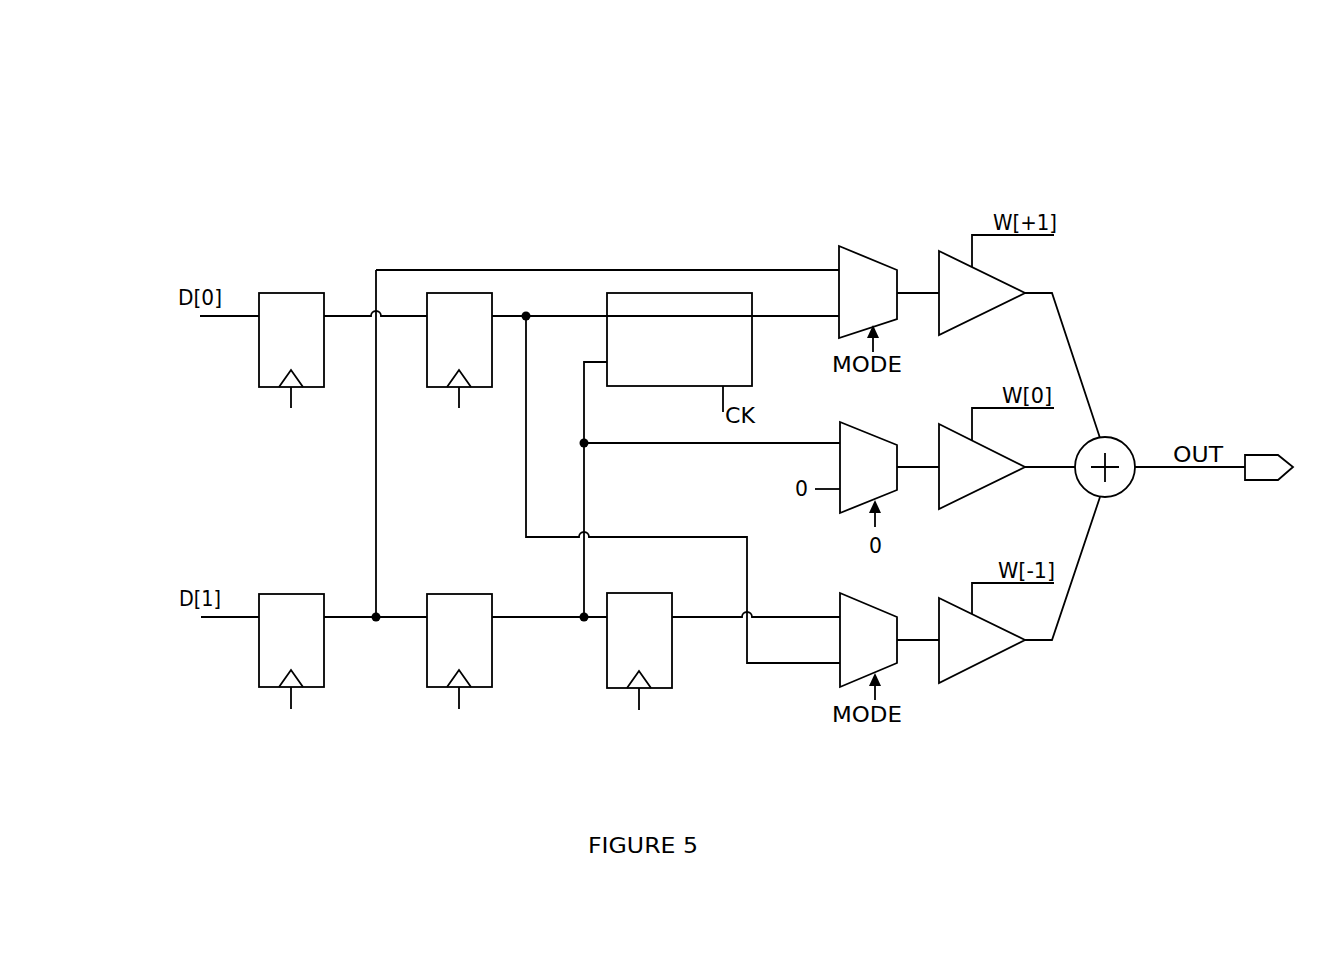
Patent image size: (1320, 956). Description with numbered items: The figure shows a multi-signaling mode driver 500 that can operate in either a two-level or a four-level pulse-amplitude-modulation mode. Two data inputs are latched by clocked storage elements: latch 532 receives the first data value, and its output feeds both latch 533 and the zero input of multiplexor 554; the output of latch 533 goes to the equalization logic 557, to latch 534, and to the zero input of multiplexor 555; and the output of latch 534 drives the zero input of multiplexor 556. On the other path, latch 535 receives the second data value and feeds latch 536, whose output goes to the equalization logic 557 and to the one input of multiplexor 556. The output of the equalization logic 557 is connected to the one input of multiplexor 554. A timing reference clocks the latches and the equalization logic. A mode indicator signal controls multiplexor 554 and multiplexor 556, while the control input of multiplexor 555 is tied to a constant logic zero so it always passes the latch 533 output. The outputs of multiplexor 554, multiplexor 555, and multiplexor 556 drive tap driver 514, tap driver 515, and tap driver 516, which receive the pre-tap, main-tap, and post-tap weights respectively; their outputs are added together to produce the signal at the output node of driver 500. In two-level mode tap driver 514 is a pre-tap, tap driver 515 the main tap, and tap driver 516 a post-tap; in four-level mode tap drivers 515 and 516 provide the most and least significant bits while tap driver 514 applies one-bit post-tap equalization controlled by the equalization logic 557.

The driver 500 is at (190, 93).
The latch 535 is at (311, 351).
The latch 536 is at (479, 351).
The latch 532 is at (311, 652).
The latch 533 is at (479, 652).
The latch 534 is at (659, 652).
The PAM-4 equalization logic 557 is at (752, 360).
The 2:1 multiplexor 554 is at (855, 253).
The 2:1 multiplexor 555 is at (857, 428).
The 2:1 multiplexor 556 is at (858, 602).
The tap driver 514 is at (988, 306).
The tap driver 515 is at (988, 480).
The tap driver 516 is at (988, 653).